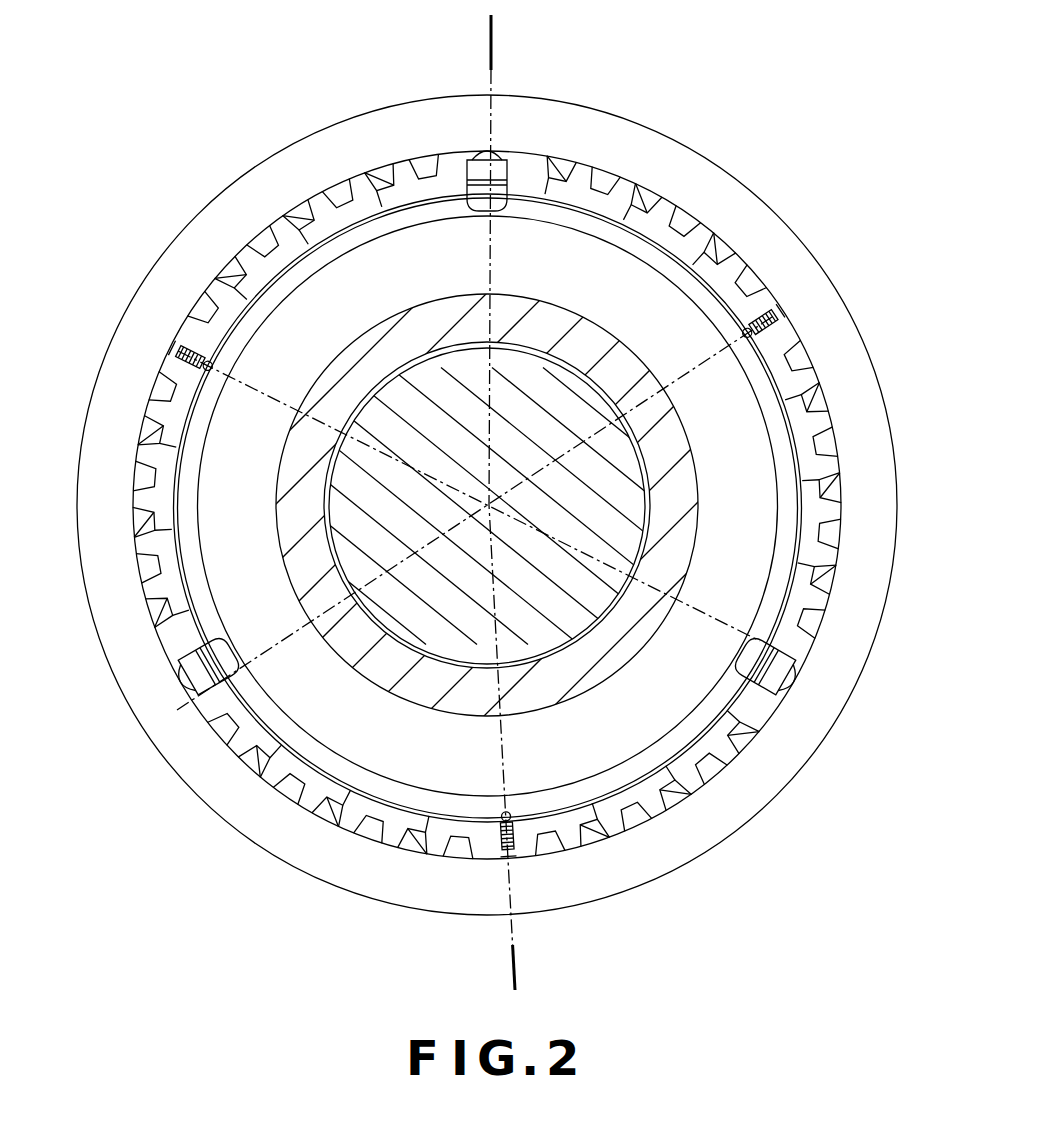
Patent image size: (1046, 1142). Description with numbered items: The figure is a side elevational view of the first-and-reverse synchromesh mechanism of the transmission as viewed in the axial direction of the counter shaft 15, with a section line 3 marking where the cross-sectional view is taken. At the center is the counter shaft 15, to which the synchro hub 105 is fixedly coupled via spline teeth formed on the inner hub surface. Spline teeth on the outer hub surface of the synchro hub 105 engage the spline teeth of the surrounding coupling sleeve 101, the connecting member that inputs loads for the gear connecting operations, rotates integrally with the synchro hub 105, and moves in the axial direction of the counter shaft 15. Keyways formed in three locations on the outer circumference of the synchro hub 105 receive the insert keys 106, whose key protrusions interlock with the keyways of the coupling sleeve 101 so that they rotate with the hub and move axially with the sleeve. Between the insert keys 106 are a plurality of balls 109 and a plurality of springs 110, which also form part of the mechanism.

The section line 3 is at (495, 42).
The counter shaft 15 is at (585, 508).
The coupling sleeve 101 is at (316, 163).
The synchro hub 105 is at (793, 632).
The insert key 106 is at (475, 166).
The ball 109 is at (213, 371).
The spring 110 is at (195, 345).